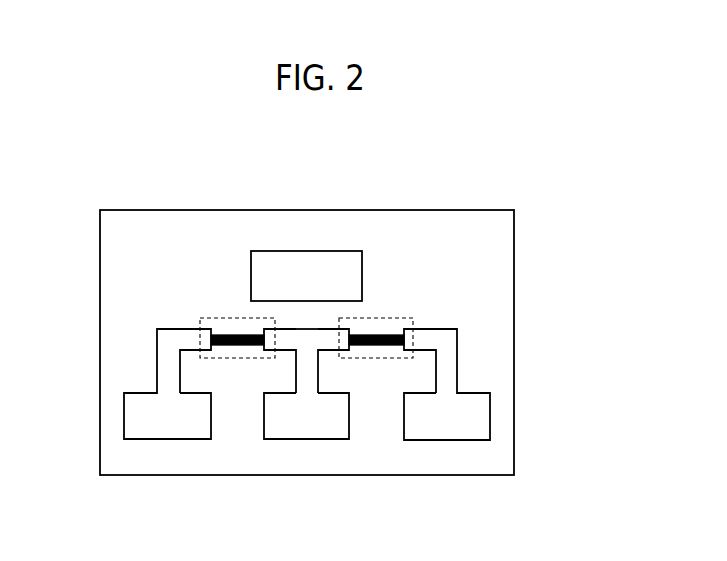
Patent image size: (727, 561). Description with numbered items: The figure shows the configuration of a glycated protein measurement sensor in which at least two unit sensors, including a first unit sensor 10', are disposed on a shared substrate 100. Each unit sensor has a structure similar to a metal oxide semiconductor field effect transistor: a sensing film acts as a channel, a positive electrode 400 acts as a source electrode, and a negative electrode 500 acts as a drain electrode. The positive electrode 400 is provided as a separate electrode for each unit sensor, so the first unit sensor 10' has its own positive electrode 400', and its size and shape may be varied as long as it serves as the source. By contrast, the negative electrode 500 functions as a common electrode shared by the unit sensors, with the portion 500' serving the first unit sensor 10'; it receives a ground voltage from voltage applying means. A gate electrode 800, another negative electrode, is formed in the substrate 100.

The substrate 100 is at (500, 240).
The gate electrode 800 is at (293, 251).
The positive electrode 400 is at (313, 384).
The positive electrode of the first unit sensor 400' is at (198, 277).
The negative electrode 500 is at (306, 421).
The negative electrode of the first unit sensor 500' is at (269, 280).
The first unit sensor 10' is at (155, 326).